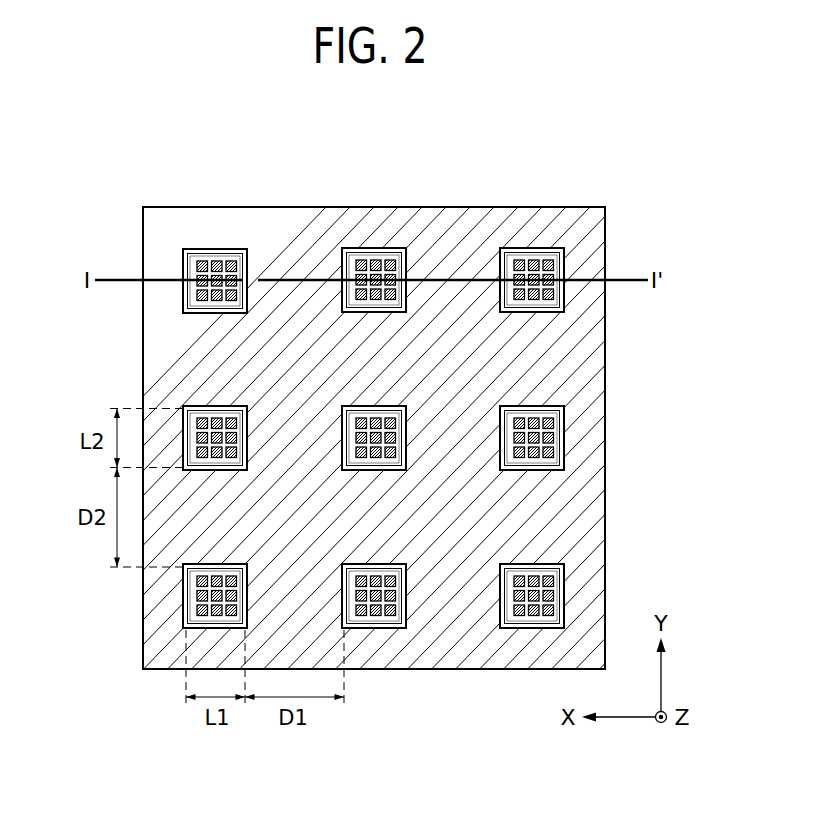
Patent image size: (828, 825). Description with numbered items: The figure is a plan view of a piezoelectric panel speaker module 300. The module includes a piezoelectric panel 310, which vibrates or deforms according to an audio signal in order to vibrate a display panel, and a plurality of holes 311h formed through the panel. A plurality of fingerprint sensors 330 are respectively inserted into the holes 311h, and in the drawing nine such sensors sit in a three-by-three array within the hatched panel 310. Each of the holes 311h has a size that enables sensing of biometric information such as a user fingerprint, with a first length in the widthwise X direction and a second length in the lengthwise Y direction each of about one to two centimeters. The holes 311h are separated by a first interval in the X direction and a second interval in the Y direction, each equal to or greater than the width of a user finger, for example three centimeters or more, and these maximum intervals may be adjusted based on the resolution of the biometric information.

The piezoelectric panel speaker module 300 is at (125, 136).
The piezoelectric panel 310 is at (373, 207).
The fingerprint sensor 330 is at (233, 240).
The holes 311h is at (203, 249).